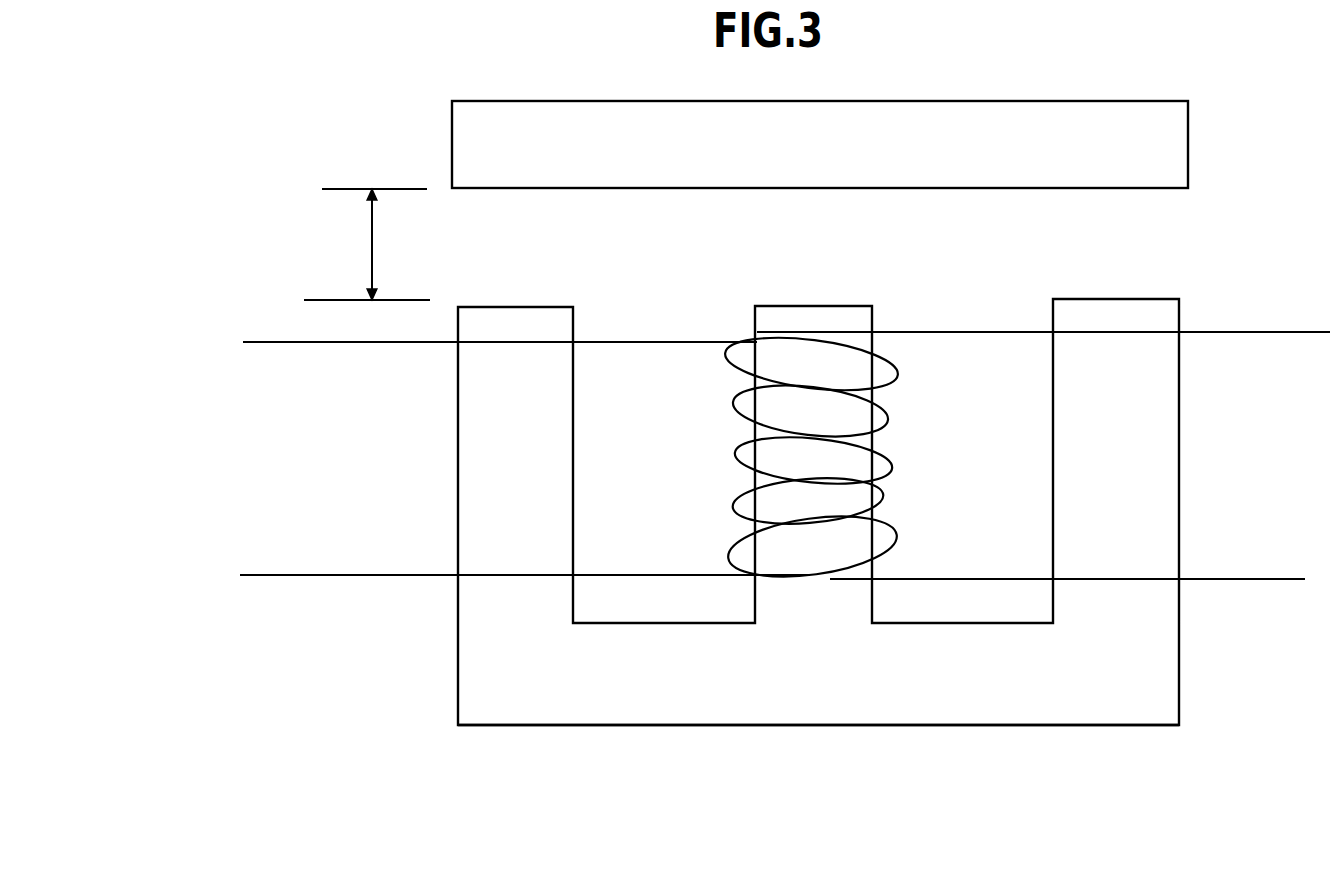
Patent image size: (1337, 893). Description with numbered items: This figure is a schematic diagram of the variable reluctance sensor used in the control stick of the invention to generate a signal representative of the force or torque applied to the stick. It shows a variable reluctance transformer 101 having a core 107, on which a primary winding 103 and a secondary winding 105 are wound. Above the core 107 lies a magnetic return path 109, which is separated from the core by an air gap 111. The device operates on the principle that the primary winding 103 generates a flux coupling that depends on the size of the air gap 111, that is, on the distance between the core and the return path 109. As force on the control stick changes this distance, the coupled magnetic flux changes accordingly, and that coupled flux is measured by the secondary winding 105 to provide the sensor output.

The variable reluctance transformer 101 is at (408, 670).
The primary winding 103 is at (1253, 332).
The secondary winding 105 is at (287, 340).
The core 107 is at (1035, 725).
The magnetic return path 109 is at (1202, 158).
The air gap 111 is at (332, 247).